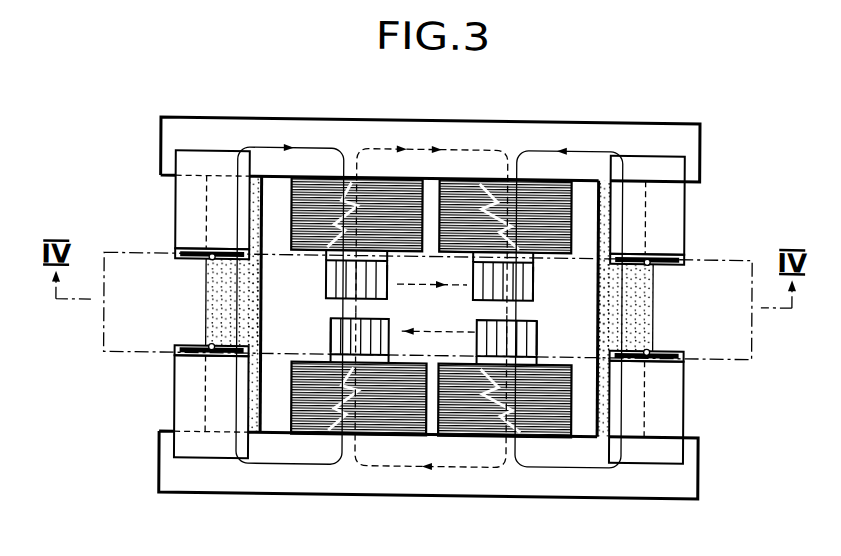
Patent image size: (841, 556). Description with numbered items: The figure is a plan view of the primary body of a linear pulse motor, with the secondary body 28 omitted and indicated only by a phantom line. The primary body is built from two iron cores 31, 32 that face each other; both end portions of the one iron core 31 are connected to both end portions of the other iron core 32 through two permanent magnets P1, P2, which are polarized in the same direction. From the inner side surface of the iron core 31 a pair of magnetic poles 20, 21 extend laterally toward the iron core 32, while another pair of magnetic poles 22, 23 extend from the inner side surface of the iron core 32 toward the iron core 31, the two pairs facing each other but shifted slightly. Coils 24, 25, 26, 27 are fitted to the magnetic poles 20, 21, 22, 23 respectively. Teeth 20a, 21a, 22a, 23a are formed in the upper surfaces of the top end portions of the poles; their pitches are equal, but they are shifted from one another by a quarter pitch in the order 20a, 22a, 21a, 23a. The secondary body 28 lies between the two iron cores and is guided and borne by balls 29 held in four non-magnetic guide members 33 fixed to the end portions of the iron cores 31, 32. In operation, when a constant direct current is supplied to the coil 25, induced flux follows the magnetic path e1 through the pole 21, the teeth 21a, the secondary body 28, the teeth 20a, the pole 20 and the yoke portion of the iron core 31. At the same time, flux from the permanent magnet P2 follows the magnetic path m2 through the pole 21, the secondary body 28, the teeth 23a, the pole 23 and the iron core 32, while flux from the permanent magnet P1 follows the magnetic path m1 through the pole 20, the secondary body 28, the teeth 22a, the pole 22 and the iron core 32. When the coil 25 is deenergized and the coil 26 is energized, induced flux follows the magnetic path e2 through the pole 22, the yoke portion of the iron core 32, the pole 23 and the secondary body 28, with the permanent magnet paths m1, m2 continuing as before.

The magnetic pole 20 is at (533, 255).
The teeth 20a is at (535, 283).
The magnetic pole 21 is at (327, 256).
The teeth 21a is at (385, 281).
The magnetic pole 22 is at (538, 347).
The teeth 22a is at (537, 318).
The magnetic pole 23 is at (333, 350).
The teeth 23a is at (333, 326).
The coil 24 is at (550, 188).
The coil 25 is at (322, 192).
The coil 26 is at (545, 415).
The coil 27 is at (320, 410).
The secondary body 28 is at (728, 354).
The ball 29 is at (210, 260).
The iron core 31 is at (662, 123).
The iron core 32 is at (652, 482).
The guide member 33 is at (187, 197).
The magnetic path m1 is at (592, 142).
The magnetic path m2 is at (272, 146).
The magnetic path e1 is at (415, 146).
The magnetic path e2 is at (448, 464).
The permanent magnet P1 is at (637, 314).
The permanent magnet P2 is at (220, 305).